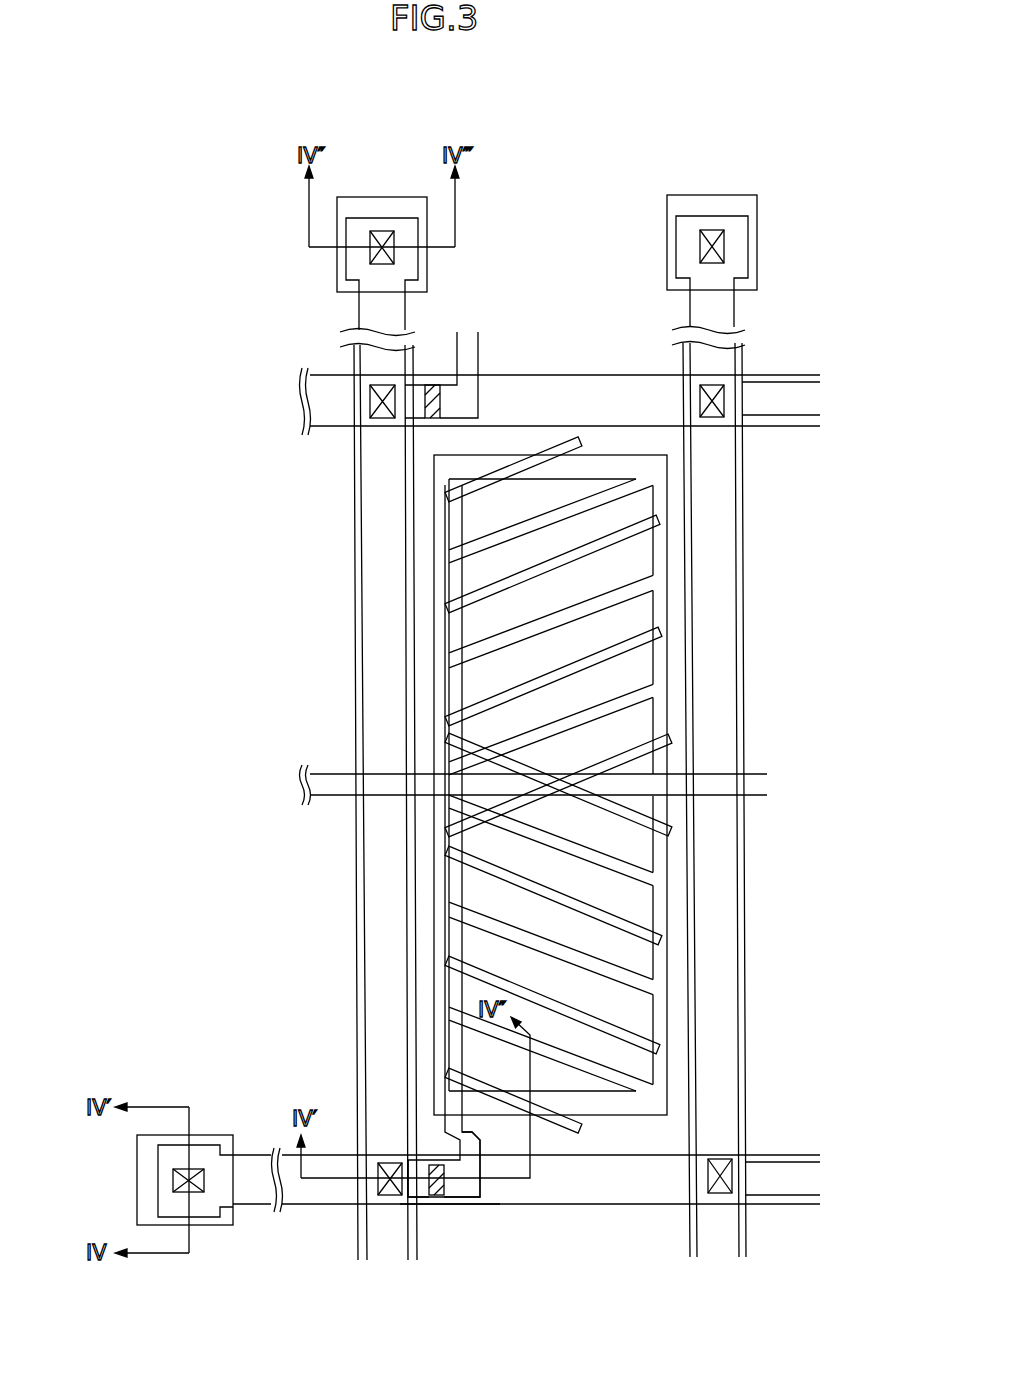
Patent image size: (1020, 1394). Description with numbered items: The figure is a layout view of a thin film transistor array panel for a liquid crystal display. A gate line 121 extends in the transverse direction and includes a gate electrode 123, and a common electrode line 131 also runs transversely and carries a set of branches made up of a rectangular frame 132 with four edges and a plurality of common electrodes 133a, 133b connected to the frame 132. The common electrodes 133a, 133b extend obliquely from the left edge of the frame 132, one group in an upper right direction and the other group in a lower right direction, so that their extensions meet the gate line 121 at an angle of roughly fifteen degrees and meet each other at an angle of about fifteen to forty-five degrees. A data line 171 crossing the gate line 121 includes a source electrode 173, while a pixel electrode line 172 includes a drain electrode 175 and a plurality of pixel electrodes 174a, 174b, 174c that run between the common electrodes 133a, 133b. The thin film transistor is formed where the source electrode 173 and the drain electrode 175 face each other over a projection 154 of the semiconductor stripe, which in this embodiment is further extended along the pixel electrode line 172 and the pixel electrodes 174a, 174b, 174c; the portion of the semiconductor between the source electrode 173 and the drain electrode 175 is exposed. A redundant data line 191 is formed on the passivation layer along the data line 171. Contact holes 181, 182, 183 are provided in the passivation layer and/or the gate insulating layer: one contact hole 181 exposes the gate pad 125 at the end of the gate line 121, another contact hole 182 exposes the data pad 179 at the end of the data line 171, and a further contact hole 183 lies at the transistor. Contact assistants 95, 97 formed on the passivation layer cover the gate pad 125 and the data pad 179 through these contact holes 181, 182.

The contact assistant 97 is at (337, 263).
The data pad 179 is at (382, 218).
The contact hole 182 is at (400, 259).
The redundant data line 191 is at (353, 517).
The data line 171 is at (362, 630).
The gate line 121 is at (652, 1205).
The gate electrode 123 is at (473, 1204).
The common electrode line 131 is at (767, 773).
The frame 132 is at (667, 497).
The common electrode 133a is at (655, 880).
The common electrode 133b is at (655, 706).
The pixel electrode line 172 is at (443, 852).
The pixel electrode 174a is at (636, 940).
The pixel electrode 174b is at (628, 662).
The pixel electrode 174c is at (640, 832).
The contact hole 183 is at (388, 1148).
The projection 154 is at (440, 1204).
The source electrode 173 is at (422, 1204).
The drain electrode 175 is at (480, 1204).
The gate pad 125 is at (210, 1223).
The contact assistant 95 is at (208, 1133).
The contact hole 181 is at (156, 1192).